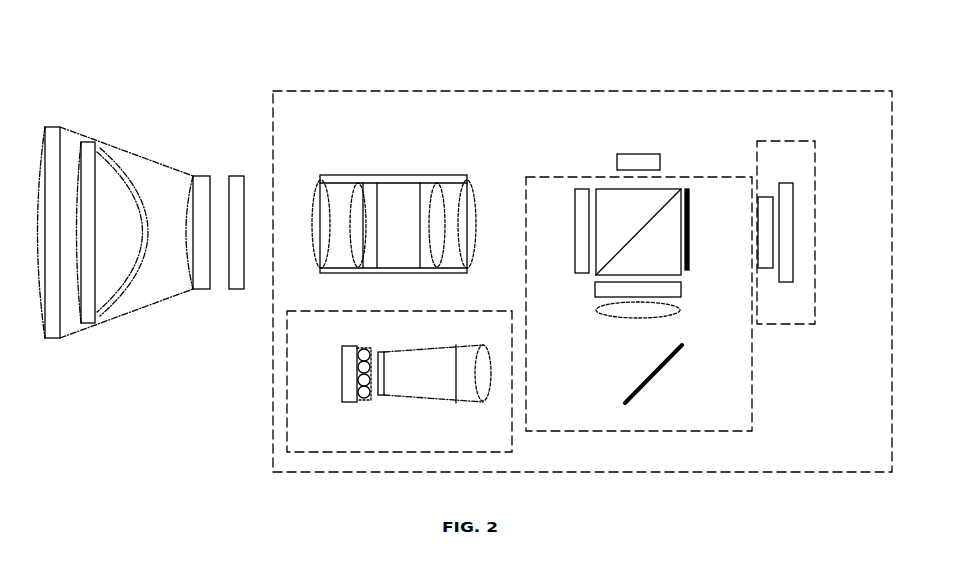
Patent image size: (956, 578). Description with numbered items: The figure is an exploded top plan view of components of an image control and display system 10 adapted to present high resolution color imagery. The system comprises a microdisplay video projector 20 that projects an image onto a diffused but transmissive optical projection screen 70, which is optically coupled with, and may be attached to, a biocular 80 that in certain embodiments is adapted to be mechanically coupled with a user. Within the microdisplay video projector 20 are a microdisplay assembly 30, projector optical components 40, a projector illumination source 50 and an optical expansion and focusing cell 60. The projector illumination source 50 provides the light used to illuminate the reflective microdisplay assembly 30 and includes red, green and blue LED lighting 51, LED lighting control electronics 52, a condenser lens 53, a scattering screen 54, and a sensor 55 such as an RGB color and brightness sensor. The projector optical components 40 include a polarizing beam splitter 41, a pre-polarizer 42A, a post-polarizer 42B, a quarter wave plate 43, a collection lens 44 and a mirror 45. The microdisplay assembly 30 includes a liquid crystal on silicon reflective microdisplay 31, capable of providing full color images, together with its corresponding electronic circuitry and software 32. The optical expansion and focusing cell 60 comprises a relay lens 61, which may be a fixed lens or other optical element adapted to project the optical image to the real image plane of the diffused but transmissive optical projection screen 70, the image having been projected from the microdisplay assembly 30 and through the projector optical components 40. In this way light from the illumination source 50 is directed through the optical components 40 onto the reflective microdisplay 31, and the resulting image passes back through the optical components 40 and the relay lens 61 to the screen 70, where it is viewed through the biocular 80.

The image control and display system 10 is at (465, 247).
The microdisplay video projector 20 is at (505, 89).
The microdisplay assembly 30 is at (820, 222).
The LCOS reflective microdisplay 31 is at (767, 190).
The electronic circuitry and software 32 is at (797, 234).
The projector optical components 40 is at (658, 304).
The polarizing beam splitter 41 is at (638, 232).
The pre-polarizer 42A is at (585, 287).
The post-polarizer 42B is at (565, 227).
The quarter wave plate 43 is at (698, 248).
The collection lens 44 is at (686, 317).
The mirror 45 is at (670, 369).
The projector illumination source 50 is at (399, 367).
The RGB LED lighting 51 is at (364, 405).
The LED lighting control electronics 52 is at (341, 372).
The condenser lens 53 is at (387, 397).
The scattering screen 54 is at (458, 404).
The sensor 55 is at (640, 147).
The optical expansion and focusing cell 60 is at (399, 196).
The relay lens 61 is at (348, 197).
The diffused but transmissive optical projection screen 70 is at (238, 172).
The biocular 80 is at (145, 153).